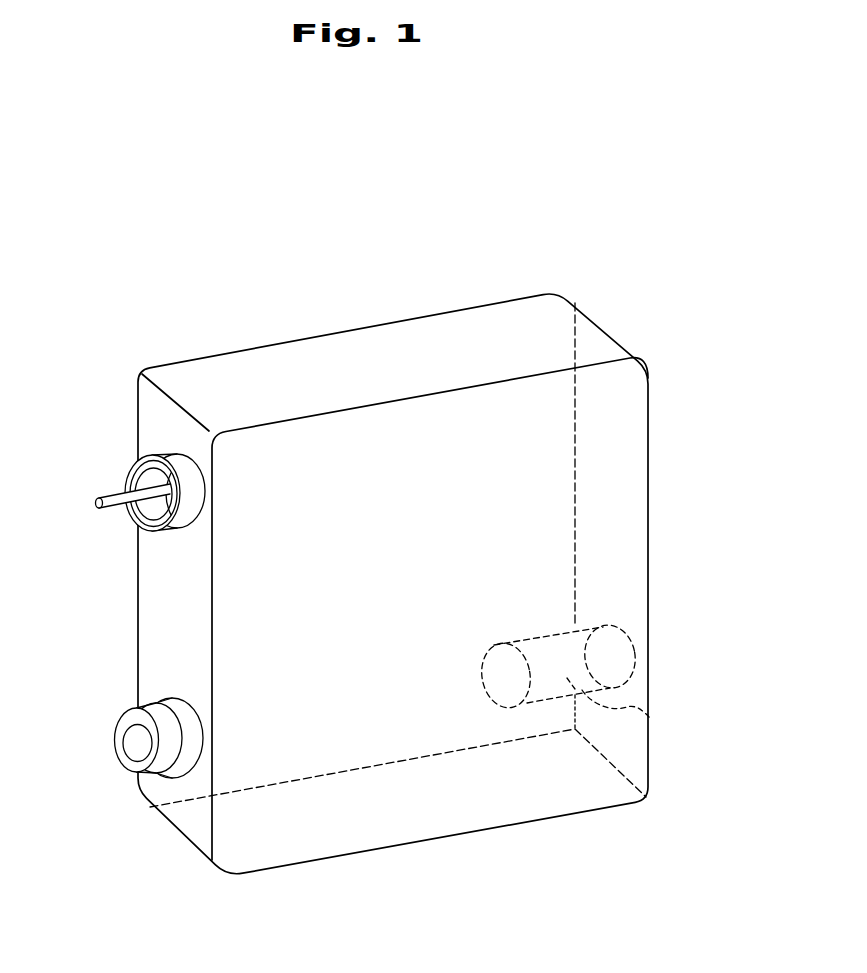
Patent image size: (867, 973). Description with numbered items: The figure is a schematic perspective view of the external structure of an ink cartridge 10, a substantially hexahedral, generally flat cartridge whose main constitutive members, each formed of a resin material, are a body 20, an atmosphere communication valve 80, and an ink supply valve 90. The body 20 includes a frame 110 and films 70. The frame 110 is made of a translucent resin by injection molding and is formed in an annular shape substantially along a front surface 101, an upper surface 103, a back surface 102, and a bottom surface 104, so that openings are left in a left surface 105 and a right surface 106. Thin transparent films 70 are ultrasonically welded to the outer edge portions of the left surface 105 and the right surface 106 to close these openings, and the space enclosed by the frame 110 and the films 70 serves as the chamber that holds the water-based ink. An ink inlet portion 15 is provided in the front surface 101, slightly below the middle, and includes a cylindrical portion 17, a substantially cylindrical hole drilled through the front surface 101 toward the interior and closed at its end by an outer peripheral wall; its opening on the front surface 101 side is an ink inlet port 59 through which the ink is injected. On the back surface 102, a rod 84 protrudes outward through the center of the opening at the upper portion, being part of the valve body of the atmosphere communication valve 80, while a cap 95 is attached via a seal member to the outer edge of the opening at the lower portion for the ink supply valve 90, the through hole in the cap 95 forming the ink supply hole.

The ink cartridge 10 is at (382, 547).
The ink inlet portion 15 is at (598, 652).
The cylindrical portion 17 is at (650, 718).
The body 20 is at (388, 582).
The ink inlet port 59 is at (613, 660).
The film 70 is at (263, 850).
The atmosphere communication valve 80 is at (110, 463).
The rod 84 is at (110, 505).
The ink supply valve 90 is at (117, 709).
The cap 95 is at (120, 750).
The front surface 101 is at (608, 545).
The back surface 102 is at (165, 627).
The upper surface 103 is at (386, 352).
The bottom surface 104 is at (430, 812).
The left surface 105 is at (537, 793).
The right surface 106 is at (203, 378).
The frame 110 is at (605, 333).